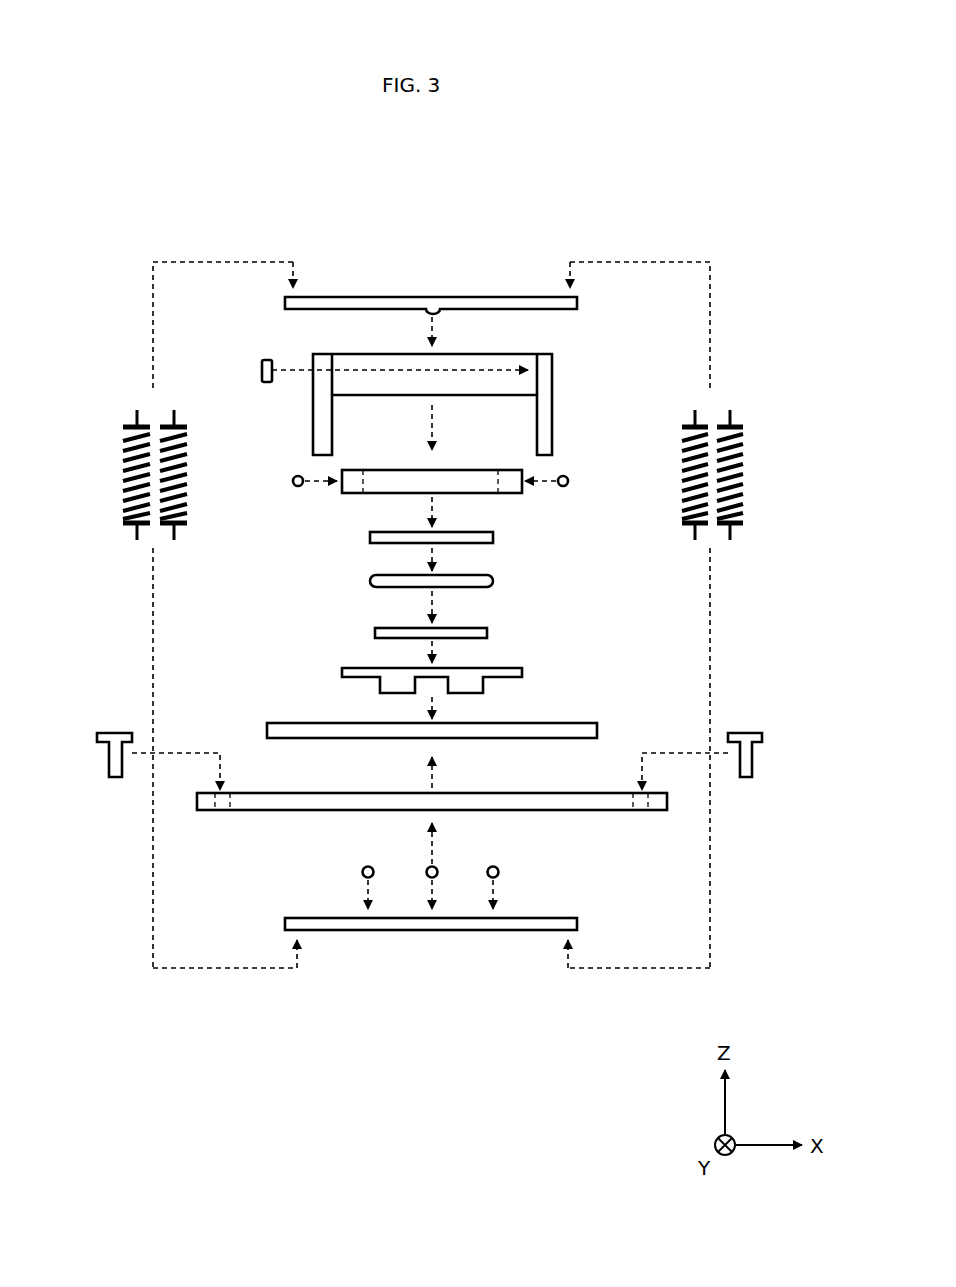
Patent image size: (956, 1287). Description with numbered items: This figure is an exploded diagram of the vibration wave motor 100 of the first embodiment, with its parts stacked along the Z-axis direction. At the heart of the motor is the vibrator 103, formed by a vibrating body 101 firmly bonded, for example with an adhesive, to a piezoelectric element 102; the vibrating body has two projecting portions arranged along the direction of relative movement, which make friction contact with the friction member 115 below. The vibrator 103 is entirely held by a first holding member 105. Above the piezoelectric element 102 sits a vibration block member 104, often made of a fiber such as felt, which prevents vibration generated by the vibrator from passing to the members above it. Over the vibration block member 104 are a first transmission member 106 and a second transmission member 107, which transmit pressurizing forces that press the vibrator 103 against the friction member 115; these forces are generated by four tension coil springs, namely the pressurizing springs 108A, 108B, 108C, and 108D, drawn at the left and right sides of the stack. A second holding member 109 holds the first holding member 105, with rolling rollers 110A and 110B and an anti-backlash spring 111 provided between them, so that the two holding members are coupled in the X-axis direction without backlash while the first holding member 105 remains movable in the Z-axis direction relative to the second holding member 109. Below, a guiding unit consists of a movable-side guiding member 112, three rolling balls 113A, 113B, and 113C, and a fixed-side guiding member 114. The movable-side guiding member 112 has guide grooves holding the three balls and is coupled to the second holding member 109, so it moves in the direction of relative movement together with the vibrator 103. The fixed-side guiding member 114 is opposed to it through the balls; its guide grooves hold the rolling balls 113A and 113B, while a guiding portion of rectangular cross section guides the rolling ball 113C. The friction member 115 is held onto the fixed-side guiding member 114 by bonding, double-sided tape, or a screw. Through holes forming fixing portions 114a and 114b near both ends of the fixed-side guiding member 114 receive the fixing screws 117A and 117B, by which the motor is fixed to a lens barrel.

The vibration wave motor 100 is at (82, 231).
The vibrating body 101 is at (524, 672).
The piezoelectric element 102 is at (489, 633).
The vibrator 103 is at (497, 657).
The vibration block member 104 is at (495, 582).
The first holding member 105 is at (352, 486).
The first transmission member 106 is at (495, 538).
The second transmission member 107 is at (500, 298).
The pressurizing spring 108A is at (187, 437).
The pressurizing spring 108B is at (680, 437).
The pressurizing spring 108C is at (122, 498).
The pressurizing spring 108D is at (744, 466).
The second holding member 109 is at (555, 373).
The rolling roller 110A is at (291, 481).
The rolling roller 110B is at (570, 481).
The anti-backlash spring 111 is at (262, 371).
The movable-side guiding member 112 is at (579, 924).
The rolling ball 113A is at (362, 872).
The rolling ball 113B is at (499, 872).
The rolling ball 113C is at (437, 868).
The fixed-side guiding member 114 is at (434, 806).
The fixing portion 114a is at (222, 812).
The fixing portion 114b is at (640, 812).
The friction member 115 is at (600, 731).
The fixing screw 117A is at (114, 738).
The fixing screw 117B is at (745, 738).